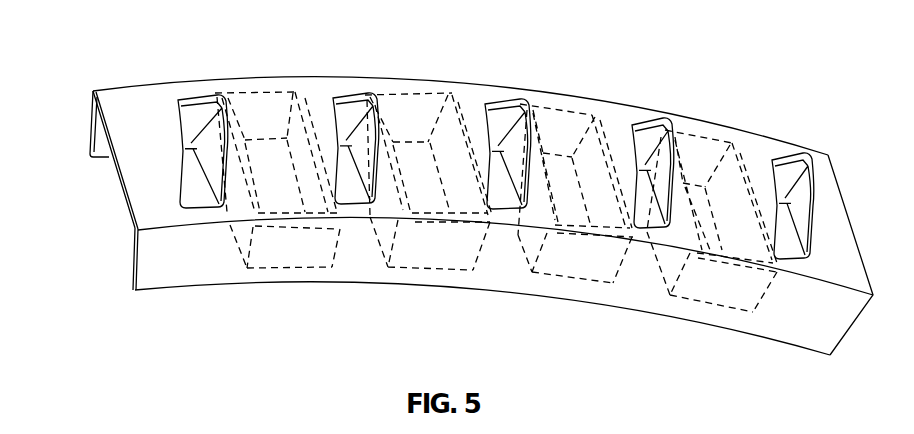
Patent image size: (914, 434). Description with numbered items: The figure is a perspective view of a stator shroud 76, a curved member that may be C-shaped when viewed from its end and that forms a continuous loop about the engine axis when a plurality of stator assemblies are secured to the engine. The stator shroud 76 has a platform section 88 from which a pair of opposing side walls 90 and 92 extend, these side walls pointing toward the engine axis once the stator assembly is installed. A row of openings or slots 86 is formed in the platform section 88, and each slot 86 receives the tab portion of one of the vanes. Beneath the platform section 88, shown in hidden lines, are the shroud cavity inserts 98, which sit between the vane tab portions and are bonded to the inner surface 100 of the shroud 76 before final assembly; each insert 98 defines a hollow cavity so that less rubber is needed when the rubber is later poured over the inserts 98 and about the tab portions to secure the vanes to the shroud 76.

The stator shroud 76 is at (442, 81).
The slot 86 is at (193, 96).
The platform section 88 is at (838, 243).
The side wall 90 is at (181, 262).
The side wall 92 is at (97, 134).
The shroud cavity insert 98 is at (286, 253).
The inner surface 100 is at (116, 174).